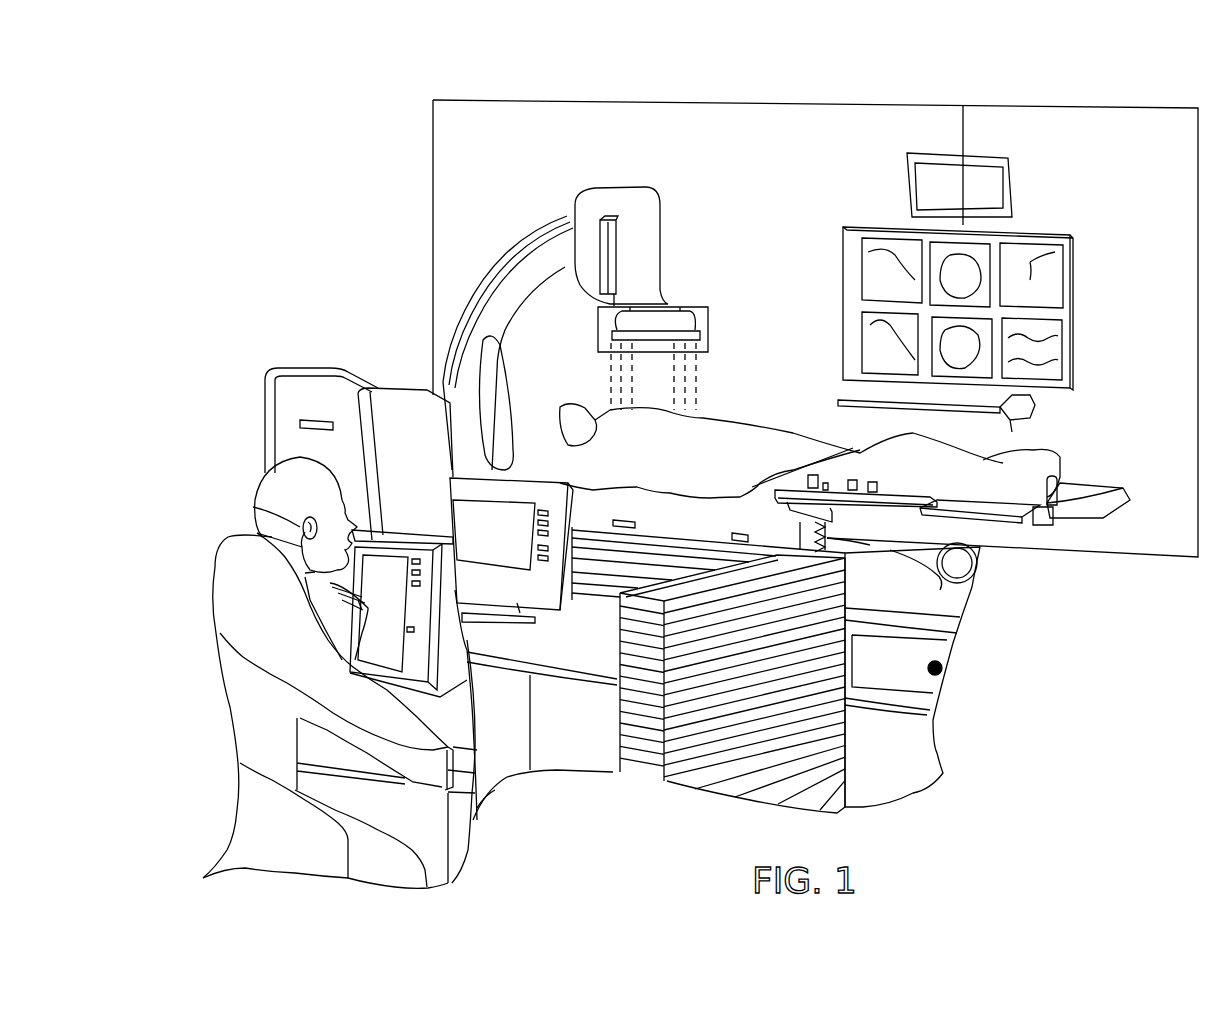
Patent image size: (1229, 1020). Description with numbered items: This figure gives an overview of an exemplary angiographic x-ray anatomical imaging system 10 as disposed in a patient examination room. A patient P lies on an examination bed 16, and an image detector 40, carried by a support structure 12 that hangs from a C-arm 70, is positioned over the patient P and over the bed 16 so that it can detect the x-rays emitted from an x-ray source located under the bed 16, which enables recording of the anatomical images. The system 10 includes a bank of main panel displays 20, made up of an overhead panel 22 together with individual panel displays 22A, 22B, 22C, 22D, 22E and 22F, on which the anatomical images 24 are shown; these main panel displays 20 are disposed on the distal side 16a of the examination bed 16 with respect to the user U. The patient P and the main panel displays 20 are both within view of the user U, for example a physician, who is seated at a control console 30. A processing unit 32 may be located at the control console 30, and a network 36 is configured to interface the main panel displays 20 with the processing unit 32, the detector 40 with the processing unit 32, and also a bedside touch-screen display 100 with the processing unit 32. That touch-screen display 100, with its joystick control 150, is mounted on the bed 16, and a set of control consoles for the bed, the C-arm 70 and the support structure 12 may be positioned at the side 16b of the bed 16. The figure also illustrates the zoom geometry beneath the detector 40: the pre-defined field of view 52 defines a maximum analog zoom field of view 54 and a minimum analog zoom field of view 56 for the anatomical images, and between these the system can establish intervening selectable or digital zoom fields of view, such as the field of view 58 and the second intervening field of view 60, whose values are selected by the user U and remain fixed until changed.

The angiographic x-ray anatomical imaging system 10 is at (413, 276).
The support structure 12 is at (658, 264).
The examination bed 16 is at (973, 558).
The distal side of the examination bed 16a is at (1103, 485).
The side of the bed 16b is at (990, 497).
The main panel displays 20 is at (1108, 275).
The overhead panel 22 is at (910, 178).
The panel display 22A is at (860, 262).
The panel display 22B is at (985, 250).
The panel display 22C is at (1060, 255).
The panel display 22D is at (850, 345).
The panel display 22E is at (985, 360).
The panel display 22F is at (1050, 352).
The displayed image 24 is at (930, 198).
The control console 30 is at (240, 427).
The processing unit 32 is at (447, 480).
The network 36 is at (823, 106).
The image detector 40 is at (688, 320).
The pre-defined field of view 52 is at (700, 375).
The maximum analog zoom field of view 54 is at (698, 395).
The minimum analog zoom field of view 56 is at (622, 372).
The intervening selectable or digital zoom field of view 58 is at (612, 392).
The second intervening selectable or digital zoom field of view 60 is at (610, 347).
The C-arm 70 is at (527, 232).
The touch-screen display 100 is at (1007, 518).
The joystick control 150 is at (1057, 493).
The patient P is at (742, 418).
The user U is at (248, 500).